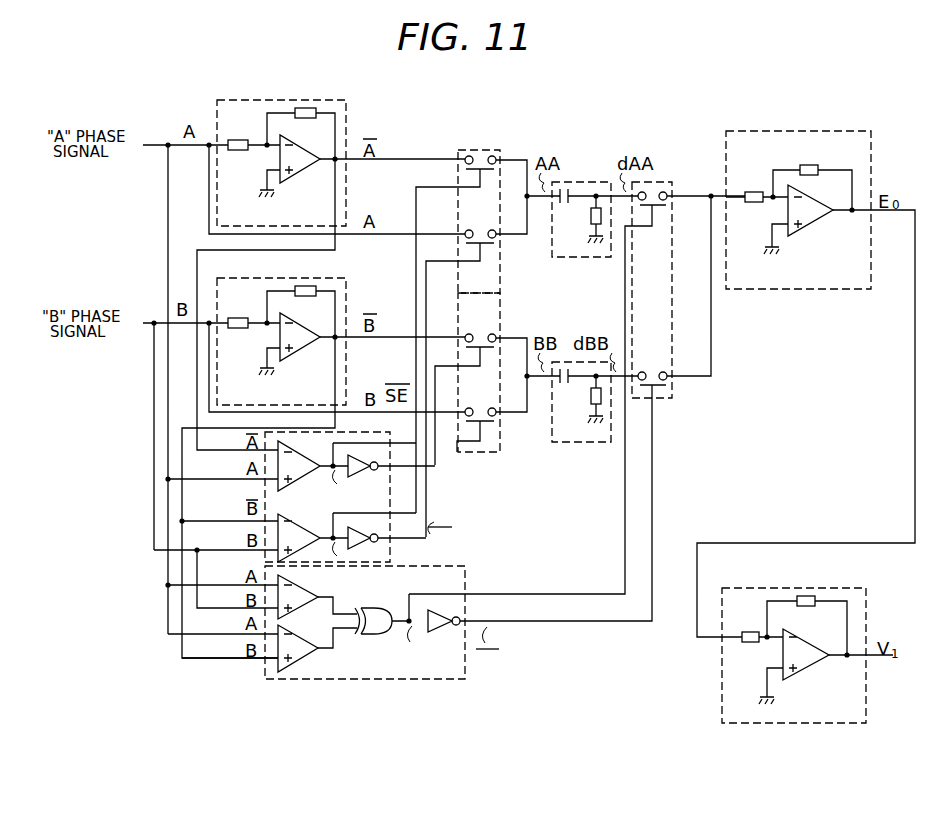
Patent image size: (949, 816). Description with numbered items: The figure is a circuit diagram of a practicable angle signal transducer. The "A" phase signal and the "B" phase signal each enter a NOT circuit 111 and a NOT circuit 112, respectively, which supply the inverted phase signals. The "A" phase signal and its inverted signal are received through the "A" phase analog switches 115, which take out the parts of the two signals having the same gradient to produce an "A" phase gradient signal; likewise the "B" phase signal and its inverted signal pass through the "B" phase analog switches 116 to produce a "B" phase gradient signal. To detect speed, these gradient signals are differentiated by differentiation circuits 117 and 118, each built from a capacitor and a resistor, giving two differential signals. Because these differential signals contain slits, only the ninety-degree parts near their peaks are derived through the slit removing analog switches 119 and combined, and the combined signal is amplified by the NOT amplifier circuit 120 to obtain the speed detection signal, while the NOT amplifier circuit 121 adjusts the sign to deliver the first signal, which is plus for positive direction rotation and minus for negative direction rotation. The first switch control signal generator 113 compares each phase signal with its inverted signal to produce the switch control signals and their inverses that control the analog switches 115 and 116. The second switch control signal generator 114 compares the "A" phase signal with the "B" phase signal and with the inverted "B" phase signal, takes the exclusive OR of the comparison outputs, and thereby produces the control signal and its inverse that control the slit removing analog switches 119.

The NOT circuit 111 is at (235, 101).
The NOT circuit 112 is at (214, 266).
The first switch control signal generator 113 is at (392, 556).
The second switch control signal generator 114 is at (278, 679).
The "A" phase analog switches 115 is at (463, 149).
The "B" phase analog switches 116 is at (463, 456).
The differentiation circuit 117 is at (552, 246).
The differentiation circuit 118 is at (552, 430).
The slit removing analog switches 119 is at (658, 398).
The NOT amplifier circuit 120 is at (749, 131).
The NOT amplifier circuit for adjusting a sign 121 is at (746, 588).